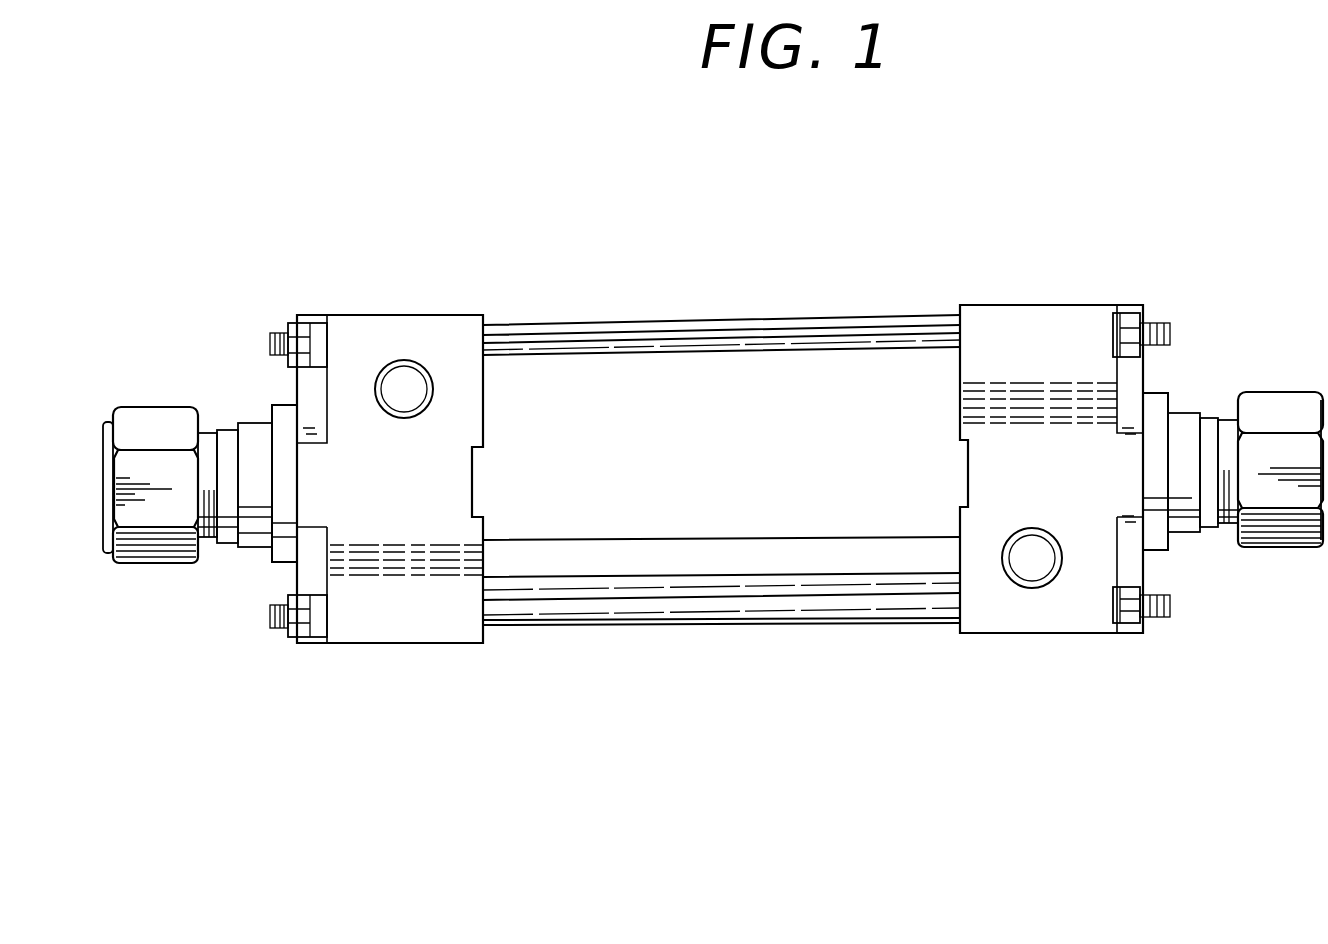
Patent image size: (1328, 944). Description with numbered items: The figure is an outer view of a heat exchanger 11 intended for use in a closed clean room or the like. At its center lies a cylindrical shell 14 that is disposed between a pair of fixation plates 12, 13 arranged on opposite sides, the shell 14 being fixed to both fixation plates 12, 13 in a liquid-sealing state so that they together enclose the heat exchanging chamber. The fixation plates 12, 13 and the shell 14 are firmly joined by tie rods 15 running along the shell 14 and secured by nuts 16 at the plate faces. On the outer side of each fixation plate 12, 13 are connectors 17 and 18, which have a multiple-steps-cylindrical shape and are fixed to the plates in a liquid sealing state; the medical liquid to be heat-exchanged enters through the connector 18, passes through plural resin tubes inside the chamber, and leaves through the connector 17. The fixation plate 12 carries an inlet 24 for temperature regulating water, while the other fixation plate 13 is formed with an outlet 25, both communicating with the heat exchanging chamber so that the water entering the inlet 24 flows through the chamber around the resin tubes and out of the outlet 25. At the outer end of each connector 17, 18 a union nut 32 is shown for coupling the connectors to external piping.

The heat exchanger 11 is at (583, 256).
The fixation plate 12 is at (376, 312).
The fixation plate 13 is at (1031, 305).
The cylindrical shell 14 is at (745, 367).
The tie rod 15 is at (605, 343).
The nut 16 is at (1127, 313).
The connector 17 is at (248, 548).
The connector 18 is at (1185, 537).
The inlet 24 is at (403, 400).
The outlet 25 is at (1028, 550).
The union nut 32 is at (147, 420).